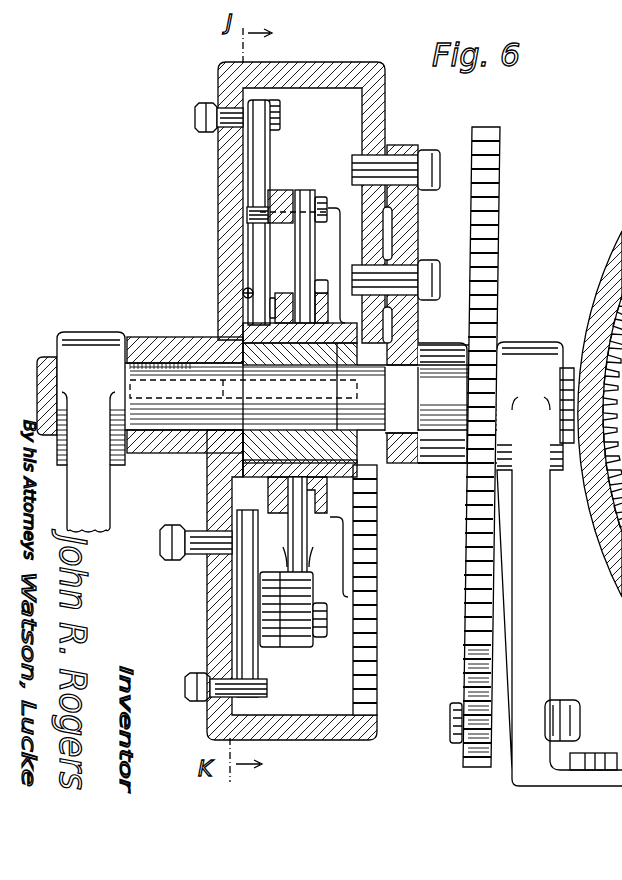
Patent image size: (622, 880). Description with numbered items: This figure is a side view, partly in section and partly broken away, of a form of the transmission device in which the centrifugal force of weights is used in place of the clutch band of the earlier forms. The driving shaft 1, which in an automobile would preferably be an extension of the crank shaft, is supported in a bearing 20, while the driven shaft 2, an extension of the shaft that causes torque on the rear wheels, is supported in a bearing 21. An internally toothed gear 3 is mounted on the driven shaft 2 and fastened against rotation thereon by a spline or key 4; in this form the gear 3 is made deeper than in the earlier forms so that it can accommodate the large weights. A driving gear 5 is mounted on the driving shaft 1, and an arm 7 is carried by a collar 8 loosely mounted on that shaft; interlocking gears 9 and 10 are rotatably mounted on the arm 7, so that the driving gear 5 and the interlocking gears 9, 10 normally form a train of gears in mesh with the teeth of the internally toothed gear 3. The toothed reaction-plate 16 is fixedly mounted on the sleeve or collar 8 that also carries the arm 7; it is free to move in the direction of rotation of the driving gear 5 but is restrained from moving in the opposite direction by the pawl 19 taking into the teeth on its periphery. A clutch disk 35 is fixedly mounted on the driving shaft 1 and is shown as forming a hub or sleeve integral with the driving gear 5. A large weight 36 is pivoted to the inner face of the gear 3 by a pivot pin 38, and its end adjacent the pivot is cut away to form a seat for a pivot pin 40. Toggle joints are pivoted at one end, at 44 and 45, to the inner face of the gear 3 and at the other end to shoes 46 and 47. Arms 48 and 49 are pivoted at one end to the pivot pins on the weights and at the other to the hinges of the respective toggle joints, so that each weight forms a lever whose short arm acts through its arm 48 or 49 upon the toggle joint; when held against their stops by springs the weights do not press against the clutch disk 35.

The driving shaft 1 is at (401, 399).
The driven shaft 2 is at (267, 408).
The internally toothed gear 3 is at (612, 262).
The spline or key 4 is at (150, 348).
The driving gear 5 is at (367, 463).
The arm 7 is at (400, 243).
The collar 8 is at (430, 341).
The interlocking gear 9 is at (412, 263).
The interlocking gear 10 is at (387, 121).
The reaction-plate 16 is at (487, 207).
The pawl 19 is at (470, 686).
The bearing 20 is at (559, 564).
The bearing 21 is at (91, 432).
The clutch disk 35 is at (305, 452).
The weight 36 is at (267, 251).
The pivot pin 38 is at (160, 540).
The pivot pin 40 is at (327, 629).
The pivot 44 is at (258, 684).
The pivot 45 is at (258, 117).
The shoe 46 is at (333, 480).
The shoe 47 is at (270, 322).
The arm 48 is at (273, 613).
The arm 49 is at (288, 185).